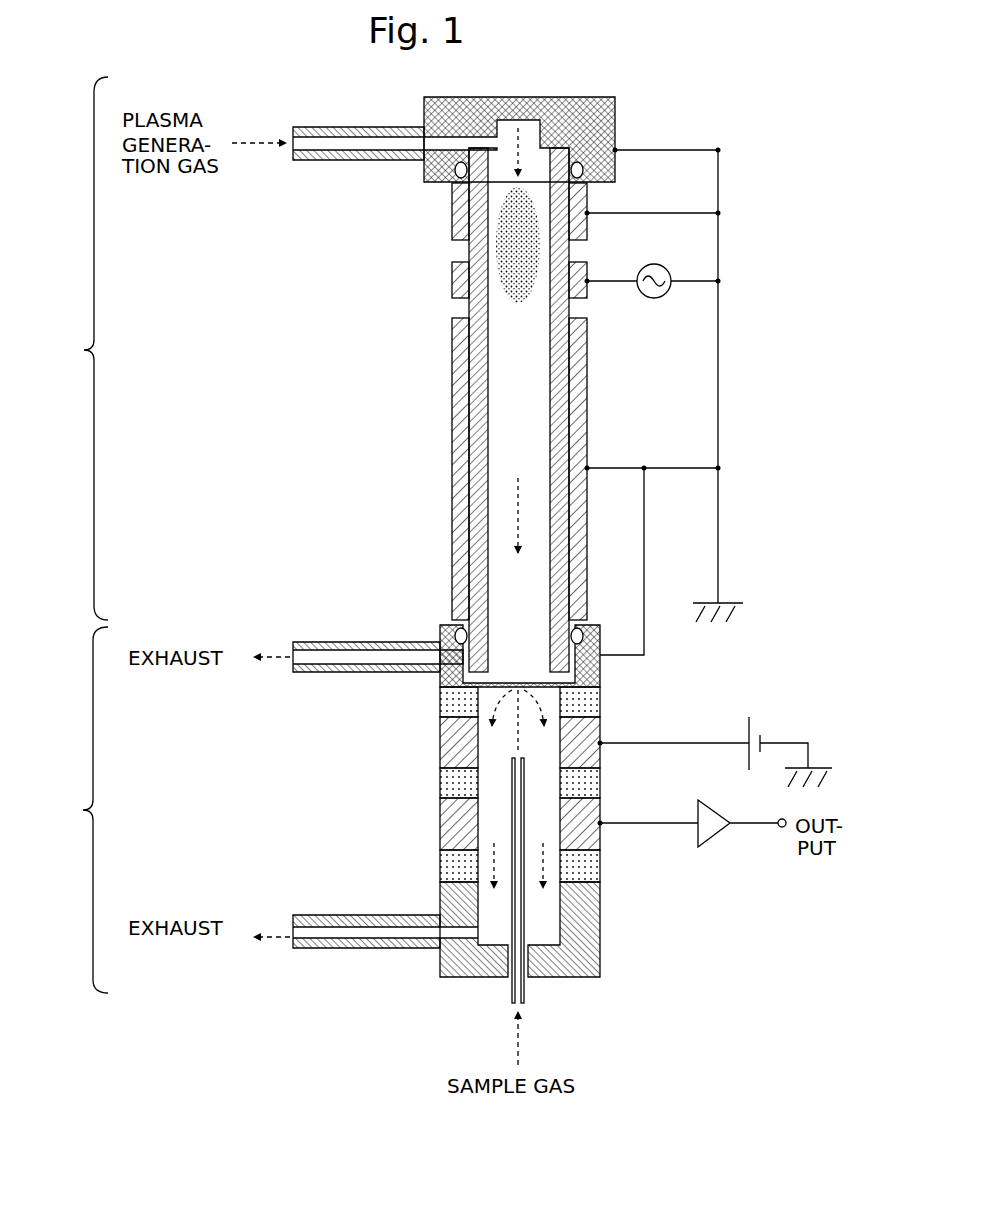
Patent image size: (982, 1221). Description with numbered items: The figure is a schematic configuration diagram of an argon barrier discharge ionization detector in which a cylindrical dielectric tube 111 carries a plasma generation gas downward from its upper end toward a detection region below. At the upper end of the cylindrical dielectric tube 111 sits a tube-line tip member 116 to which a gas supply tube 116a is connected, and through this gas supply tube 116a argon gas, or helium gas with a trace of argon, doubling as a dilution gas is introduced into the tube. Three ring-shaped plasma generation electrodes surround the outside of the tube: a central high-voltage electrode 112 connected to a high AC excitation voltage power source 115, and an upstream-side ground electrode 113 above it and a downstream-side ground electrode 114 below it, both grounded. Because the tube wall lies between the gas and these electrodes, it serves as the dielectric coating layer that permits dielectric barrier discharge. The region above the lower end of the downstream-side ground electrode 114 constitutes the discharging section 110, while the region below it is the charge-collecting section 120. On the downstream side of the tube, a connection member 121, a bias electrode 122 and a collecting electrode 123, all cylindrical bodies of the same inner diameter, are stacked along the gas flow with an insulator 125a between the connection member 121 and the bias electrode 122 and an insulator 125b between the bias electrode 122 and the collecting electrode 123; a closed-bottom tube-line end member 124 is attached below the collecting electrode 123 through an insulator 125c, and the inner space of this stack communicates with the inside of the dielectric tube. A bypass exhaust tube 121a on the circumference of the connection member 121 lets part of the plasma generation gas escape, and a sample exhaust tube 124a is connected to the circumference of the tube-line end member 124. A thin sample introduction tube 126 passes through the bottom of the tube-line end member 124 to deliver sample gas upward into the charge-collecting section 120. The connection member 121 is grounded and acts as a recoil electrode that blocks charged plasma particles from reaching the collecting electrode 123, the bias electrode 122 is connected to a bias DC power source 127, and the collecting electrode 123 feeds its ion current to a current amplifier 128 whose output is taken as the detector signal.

The discharging section 110 is at (70, 348).
The cylindrical dielectric tube 111 is at (468, 307).
The high-voltage electrode 112 is at (452, 280).
The upstream-side ground electrode 113 is at (452, 210).
The downstream-side ground electrode 114 is at (452, 462).
The high AC excitation voltage power source 115 is at (658, 266).
The tube-line tip member 116 is at (615, 128).
The gas supply tube 116a is at (333, 158).
The charge-collecting section 120 is at (70, 810).
The connection member 121 is at (603, 670).
The bypass exhaust tube 121a is at (330, 641).
The bias electrode 122 is at (603, 765).
The collecting electrode 123 is at (603, 845).
The tube-line end member 124 is at (603, 935).
The sample exhaust tube 124a is at (330, 914).
The insulator 125a is at (440, 700).
The insulator 125b is at (440, 782).
The insulator 125c is at (440, 860).
The sample introduction tube 126 is at (510, 930).
The bias DC power source 127 is at (753, 715).
The current amplifier 128 is at (718, 842).